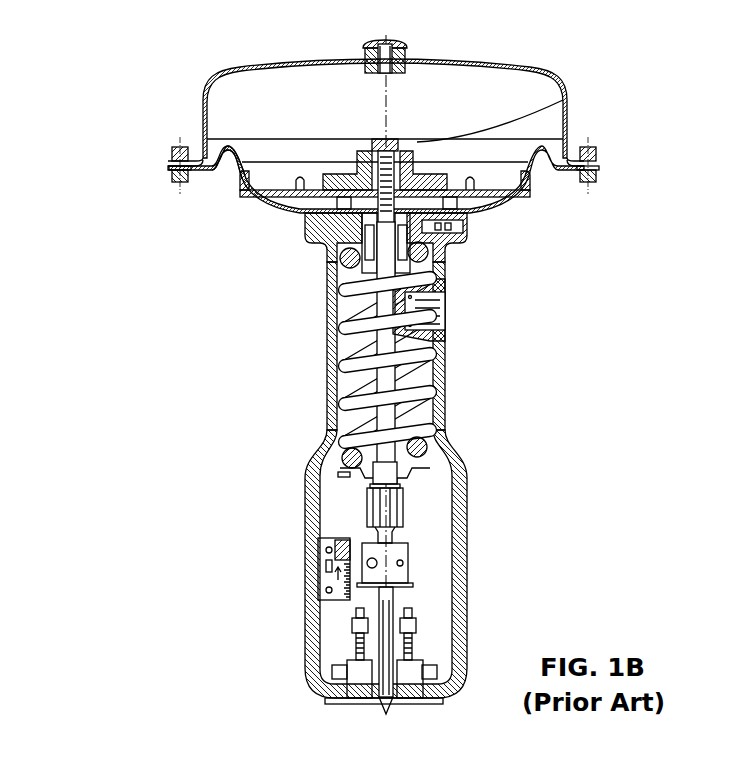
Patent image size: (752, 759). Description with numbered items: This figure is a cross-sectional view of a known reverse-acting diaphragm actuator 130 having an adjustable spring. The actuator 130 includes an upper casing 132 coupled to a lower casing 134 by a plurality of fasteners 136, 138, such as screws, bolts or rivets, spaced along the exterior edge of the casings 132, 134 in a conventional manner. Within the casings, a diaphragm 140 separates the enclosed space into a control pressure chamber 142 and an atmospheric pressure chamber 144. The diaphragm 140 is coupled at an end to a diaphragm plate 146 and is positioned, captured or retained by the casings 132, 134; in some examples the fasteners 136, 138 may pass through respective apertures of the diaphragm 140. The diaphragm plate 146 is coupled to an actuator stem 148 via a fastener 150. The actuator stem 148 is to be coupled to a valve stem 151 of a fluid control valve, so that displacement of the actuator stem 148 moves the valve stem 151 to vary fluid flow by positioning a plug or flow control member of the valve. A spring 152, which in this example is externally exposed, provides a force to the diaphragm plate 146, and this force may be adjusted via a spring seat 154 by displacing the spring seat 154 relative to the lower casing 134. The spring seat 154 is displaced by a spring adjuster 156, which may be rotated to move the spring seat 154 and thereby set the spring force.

The reverse-acting diaphragm actuator 130 is at (118, 57).
The upper casing 132 is at (200, 118).
The lower casing 134 is at (238, 211).
The fastener 136 is at (172, 150).
The fastener 138 is at (596, 148).
The diaphragm 140 is at (220, 187).
The control pressure chamber 142 is at (237, 203).
The atmospheric pressure chamber 144 is at (240, 113).
The diaphragm plate 146 is at (502, 180).
The actuator stem 148 is at (396, 279).
The fastener 150 is at (563, 100).
The valve stem 151 is at (348, 602).
The spring 152 is at (358, 378).
The spring seat 154 is at (345, 455).
The spring adjuster 156 is at (382, 508).